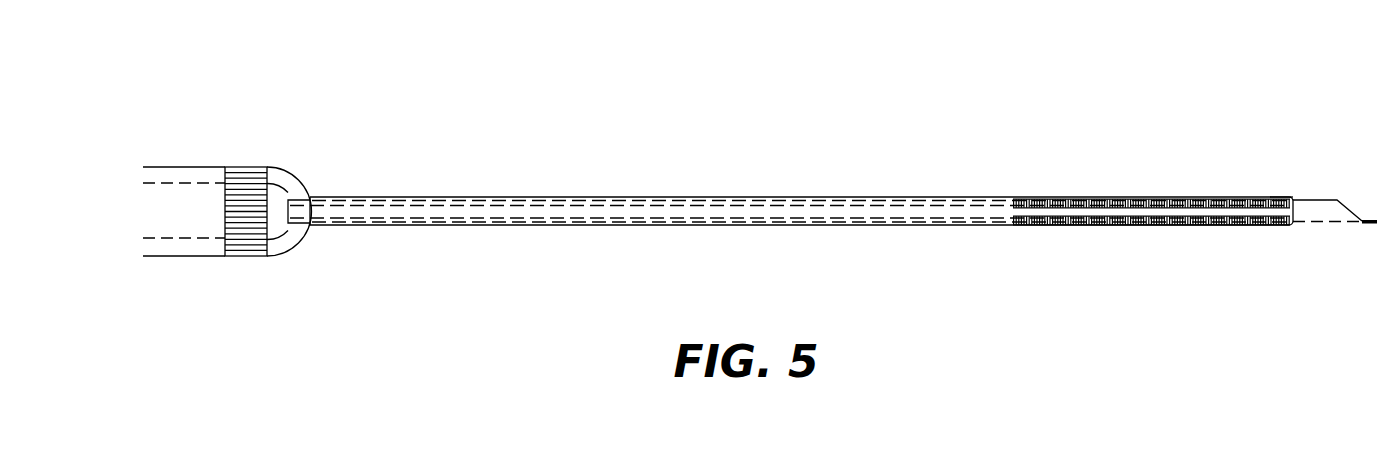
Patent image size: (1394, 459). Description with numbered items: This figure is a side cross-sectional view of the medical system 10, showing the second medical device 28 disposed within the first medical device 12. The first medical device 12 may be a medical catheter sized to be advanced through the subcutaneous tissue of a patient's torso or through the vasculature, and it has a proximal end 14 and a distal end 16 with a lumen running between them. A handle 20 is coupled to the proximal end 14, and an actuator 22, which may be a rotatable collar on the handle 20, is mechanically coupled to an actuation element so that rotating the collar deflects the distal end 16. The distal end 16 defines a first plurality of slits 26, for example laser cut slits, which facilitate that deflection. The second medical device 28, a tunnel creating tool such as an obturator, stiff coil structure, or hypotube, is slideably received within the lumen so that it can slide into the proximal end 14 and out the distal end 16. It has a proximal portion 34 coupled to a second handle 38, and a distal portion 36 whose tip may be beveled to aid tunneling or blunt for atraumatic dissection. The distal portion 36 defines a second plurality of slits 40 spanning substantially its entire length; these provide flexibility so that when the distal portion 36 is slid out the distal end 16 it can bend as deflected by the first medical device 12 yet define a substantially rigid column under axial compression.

The medical system 10 is at (1196, 92).
The first medical device 12 is at (615, 197).
The proximal end 14 is at (440, 197).
The distal end 16 is at (1262, 197).
The handle 20 is at (184, 203).
The actuator 22 is at (248, 170).
The first plurality of slits 26 is at (1268, 222).
The second medical device 28 is at (543, 210).
The proximal portion 34 is at (362, 197).
The distal portion 36 is at (1107, 197).
The second handle 38 is at (174, 238).
The second plurality of slits 40 is at (1023, 222).